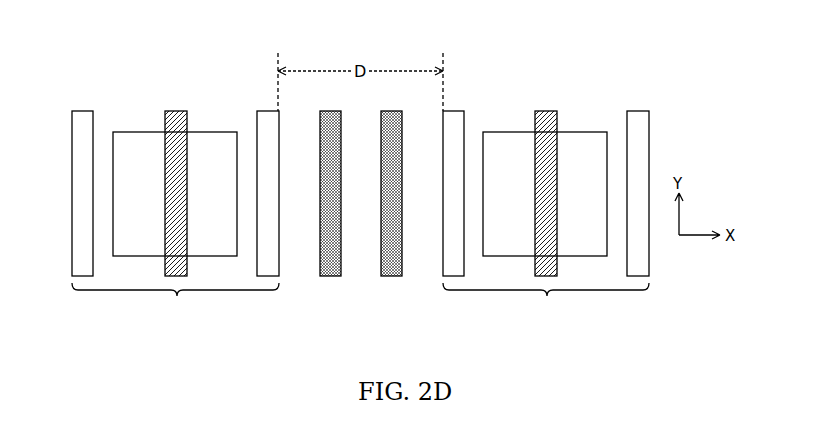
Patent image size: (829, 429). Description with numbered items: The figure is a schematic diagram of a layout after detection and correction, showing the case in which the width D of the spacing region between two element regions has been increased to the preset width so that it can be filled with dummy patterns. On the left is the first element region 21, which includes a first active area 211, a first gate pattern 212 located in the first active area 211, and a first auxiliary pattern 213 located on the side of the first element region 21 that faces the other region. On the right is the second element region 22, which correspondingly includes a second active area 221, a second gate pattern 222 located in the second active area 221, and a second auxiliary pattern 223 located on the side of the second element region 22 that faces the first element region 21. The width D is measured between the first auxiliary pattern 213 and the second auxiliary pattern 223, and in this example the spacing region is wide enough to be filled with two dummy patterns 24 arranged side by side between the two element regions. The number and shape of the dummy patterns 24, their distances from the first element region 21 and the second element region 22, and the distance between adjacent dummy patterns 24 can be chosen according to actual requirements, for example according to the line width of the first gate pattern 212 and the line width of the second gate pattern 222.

The first element region 21 is at (204, 196).
The first active area 211 is at (134, 256).
The first gate pattern 212 is at (175, 110).
The first auxiliary pattern 213 is at (278, 130).
The second element region 22 is at (536, 193).
The second active area 221 is at (504, 256).
The second gate pattern 222 is at (545, 110).
The second auxiliary pattern 223 is at (453, 110).
The dummy pattern 24 is at (330, 276).